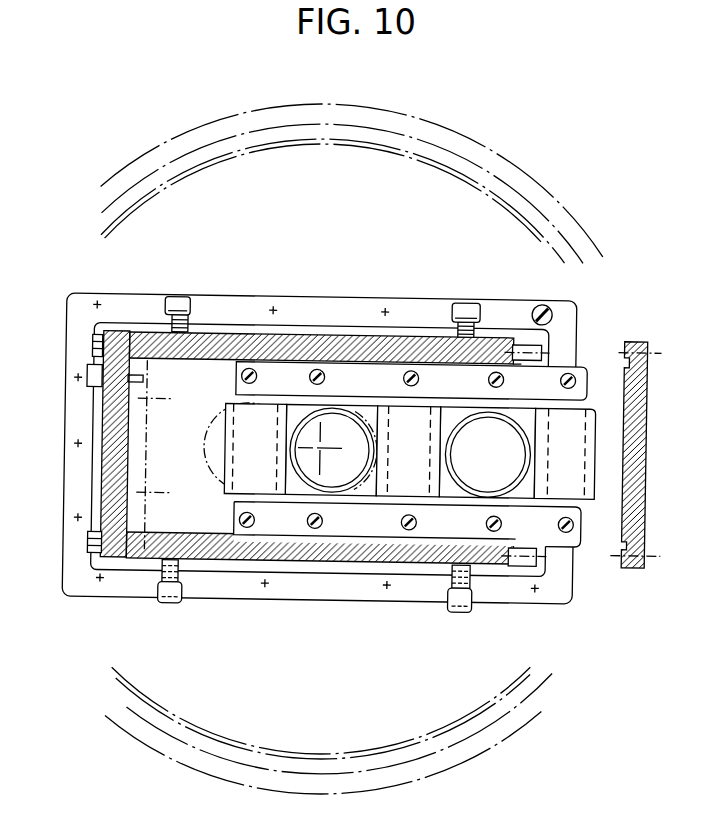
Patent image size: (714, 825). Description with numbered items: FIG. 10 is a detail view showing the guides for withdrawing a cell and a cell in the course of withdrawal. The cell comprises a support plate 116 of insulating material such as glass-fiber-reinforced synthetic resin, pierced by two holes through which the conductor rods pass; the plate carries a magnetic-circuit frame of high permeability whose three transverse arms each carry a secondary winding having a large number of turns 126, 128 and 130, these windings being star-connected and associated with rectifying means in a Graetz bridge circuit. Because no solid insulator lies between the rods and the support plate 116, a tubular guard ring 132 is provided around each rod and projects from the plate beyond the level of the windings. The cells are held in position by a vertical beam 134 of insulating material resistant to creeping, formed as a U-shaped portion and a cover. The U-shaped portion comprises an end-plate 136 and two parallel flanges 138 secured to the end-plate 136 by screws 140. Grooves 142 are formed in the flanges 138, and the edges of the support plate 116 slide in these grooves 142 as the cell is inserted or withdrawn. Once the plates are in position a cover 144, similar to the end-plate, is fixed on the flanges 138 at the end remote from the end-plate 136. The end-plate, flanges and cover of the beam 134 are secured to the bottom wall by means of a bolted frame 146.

The support plate 116 is at (582, 361).
The secondary winding 126 is at (268, 449).
The secondary winding 128 is at (420, 450).
The secondary winding 130 is at (580, 450).
The tubular guard ring 132 is at (335, 408).
The vertical beam 134 is at (94, 475).
The end-plate 136 is at (112, 408).
The flange 138 is at (246, 338).
The screw 140 is at (93, 341).
The groove 142 is at (193, 533).
The cover 144 is at (645, 344).
The bolted frame 146 is at (208, 583).